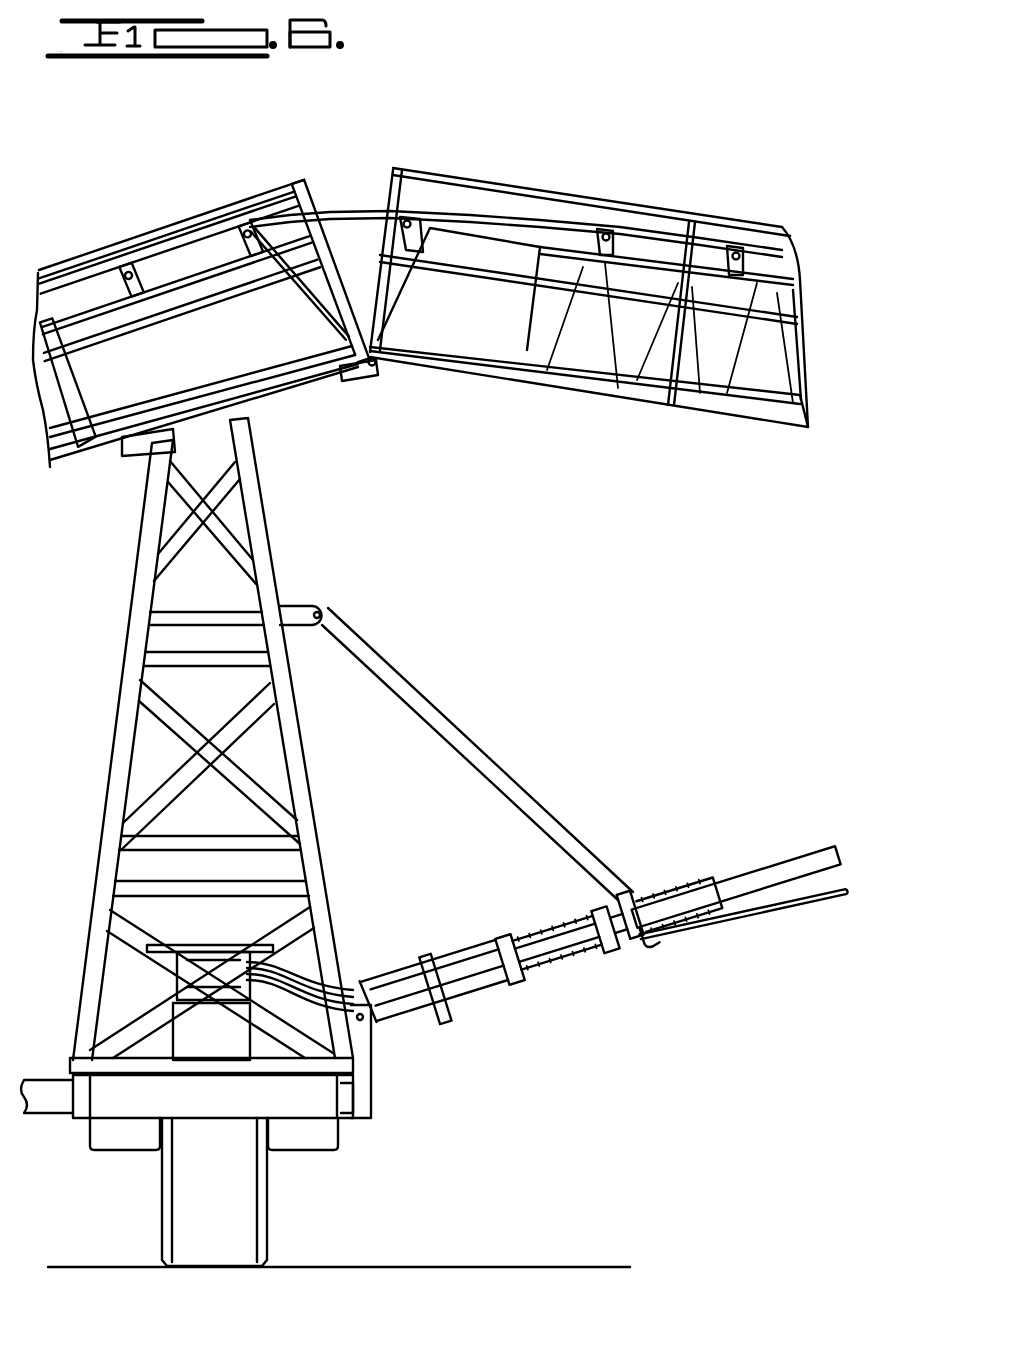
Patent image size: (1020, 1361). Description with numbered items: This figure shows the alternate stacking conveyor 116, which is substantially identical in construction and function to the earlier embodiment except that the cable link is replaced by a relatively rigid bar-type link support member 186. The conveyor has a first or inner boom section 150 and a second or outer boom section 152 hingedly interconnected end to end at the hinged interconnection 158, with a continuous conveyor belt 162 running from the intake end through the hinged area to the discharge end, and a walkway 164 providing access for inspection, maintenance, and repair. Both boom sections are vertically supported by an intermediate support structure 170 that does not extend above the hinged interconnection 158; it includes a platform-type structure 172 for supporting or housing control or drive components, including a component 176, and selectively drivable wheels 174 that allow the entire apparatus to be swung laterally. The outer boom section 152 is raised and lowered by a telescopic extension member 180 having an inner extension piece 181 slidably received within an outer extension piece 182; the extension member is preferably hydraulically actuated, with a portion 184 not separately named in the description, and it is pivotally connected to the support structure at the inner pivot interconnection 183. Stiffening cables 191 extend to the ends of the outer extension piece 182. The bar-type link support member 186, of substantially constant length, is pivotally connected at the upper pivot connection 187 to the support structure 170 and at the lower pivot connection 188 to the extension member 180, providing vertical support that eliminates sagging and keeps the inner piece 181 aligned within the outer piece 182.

The stacking conveyor 116 is at (609, 597).
The first or inner boom section 150 is at (172, 222).
The second or outer boom section 152 is at (520, 190).
The hinged interconnection 158 is at (372, 368).
The continuous conveyor belt 162 is at (352, 210).
The walkway 164 is at (634, 292).
The intermediate support structure 170 is at (101, 826).
The platform-type structure 172 is at (133, 1107).
The selectively drivable wheels 174 is at (240, 1210).
The drive housing 176 is at (207, 1030).
The extension member 180 is at (668, 937).
The inner extension piece 181 is at (492, 988).
The outer extension piece 182 is at (817, 850).
The inner pivot interconnection 183 is at (368, 1022).
The actuator cylinder 184 is at (412, 1020).
The bar-type link support member 186 is at (500, 768).
The upper pivot connection 187 is at (320, 612).
The lower pivot connection 188 is at (633, 900).
The stiffening cables 191 is at (781, 910).